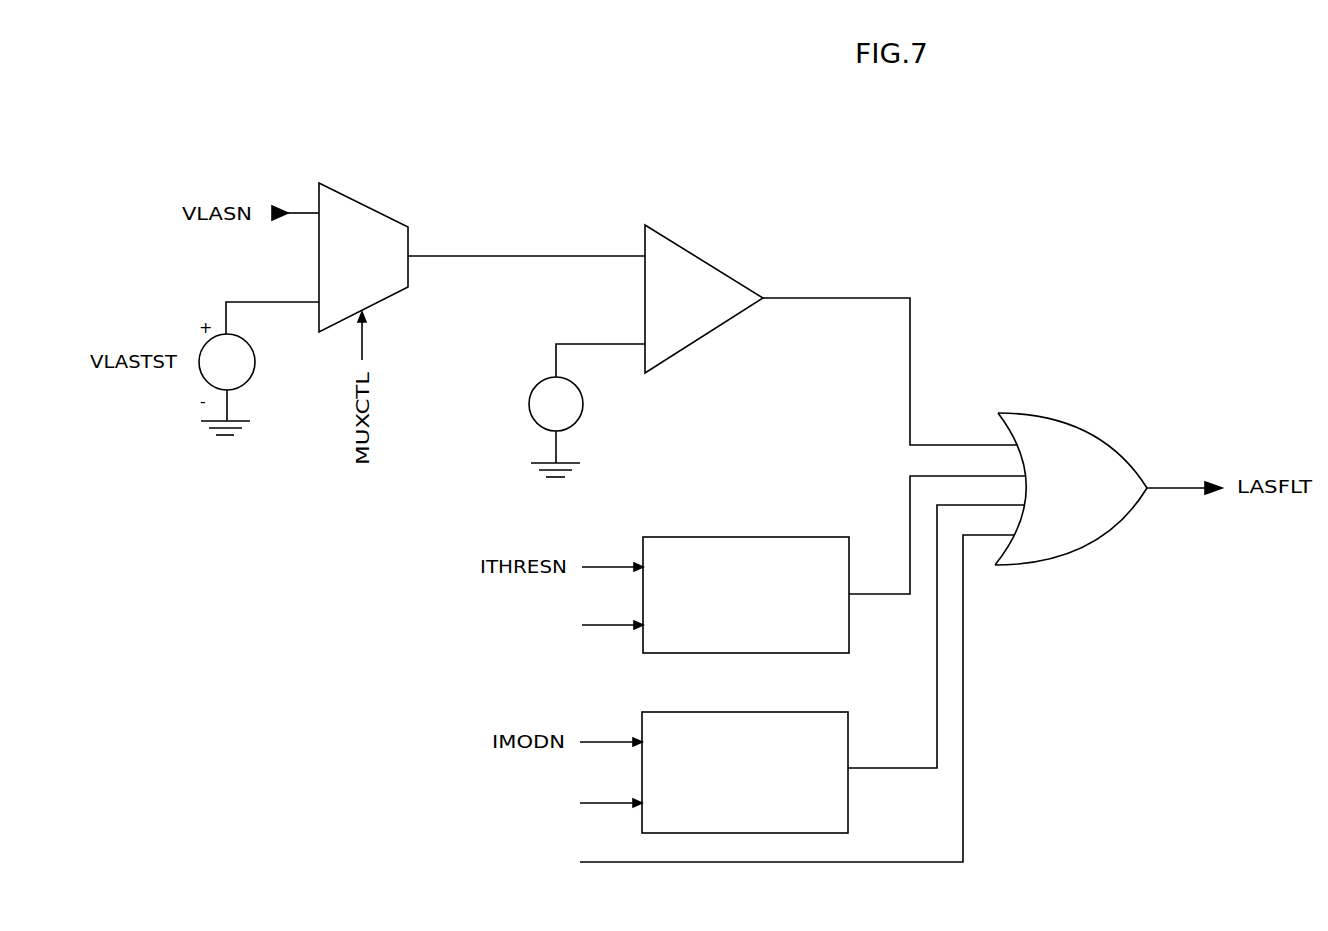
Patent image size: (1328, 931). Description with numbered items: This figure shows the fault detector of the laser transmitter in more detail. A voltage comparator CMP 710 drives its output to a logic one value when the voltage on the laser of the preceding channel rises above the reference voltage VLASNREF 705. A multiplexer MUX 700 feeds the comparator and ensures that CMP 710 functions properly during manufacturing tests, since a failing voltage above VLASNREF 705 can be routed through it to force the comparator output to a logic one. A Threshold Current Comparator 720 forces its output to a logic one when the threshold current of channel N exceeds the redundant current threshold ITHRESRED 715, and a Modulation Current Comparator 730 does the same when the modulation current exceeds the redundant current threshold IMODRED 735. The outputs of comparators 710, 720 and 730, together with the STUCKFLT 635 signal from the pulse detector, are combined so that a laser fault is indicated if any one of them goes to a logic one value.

The multiplexer MUX 700 is at (352, 193).
The reference voltage VLASNREF 705 is at (526, 410).
The voltage comparator (CMP) 710 is at (690, 245).
The redundant current threshold ITHRESRED 715 is at (540, 613).
The Threshold Current Comparator 720 is at (721, 532).
The Modulation Current Comparator 730 is at (713, 710).
The redundant current threshold IMODRED 735 is at (551, 790).
The STUCKFLT 635 is at (703, 705).